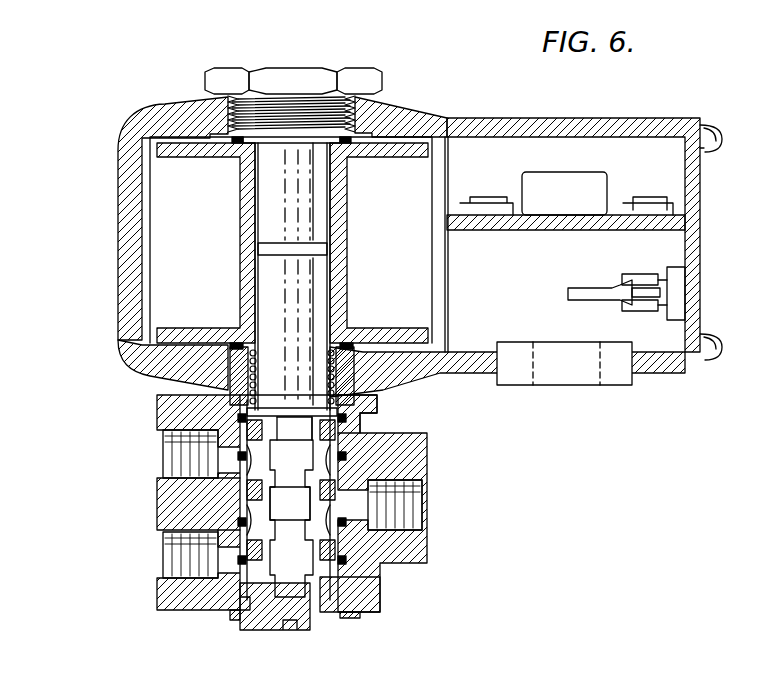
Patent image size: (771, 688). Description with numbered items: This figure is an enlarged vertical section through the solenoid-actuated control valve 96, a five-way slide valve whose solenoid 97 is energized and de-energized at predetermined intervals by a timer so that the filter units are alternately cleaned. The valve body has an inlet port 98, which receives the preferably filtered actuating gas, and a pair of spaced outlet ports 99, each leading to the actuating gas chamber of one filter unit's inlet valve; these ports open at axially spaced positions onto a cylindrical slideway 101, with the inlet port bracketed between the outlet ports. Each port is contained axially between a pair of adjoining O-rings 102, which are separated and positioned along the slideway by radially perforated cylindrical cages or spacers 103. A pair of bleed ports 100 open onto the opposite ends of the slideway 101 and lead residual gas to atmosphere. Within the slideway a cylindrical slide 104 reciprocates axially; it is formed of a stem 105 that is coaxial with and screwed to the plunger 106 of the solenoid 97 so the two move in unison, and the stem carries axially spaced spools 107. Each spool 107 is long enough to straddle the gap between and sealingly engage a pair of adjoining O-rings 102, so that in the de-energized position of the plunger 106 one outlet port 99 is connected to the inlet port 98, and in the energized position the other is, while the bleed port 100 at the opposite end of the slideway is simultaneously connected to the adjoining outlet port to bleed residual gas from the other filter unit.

The control valve 96 is at (153, 509).
The solenoid 97 is at (114, 251).
The inlet port 98 is at (424, 508).
The outlet ports 99 is at (195, 455).
The bleed ports 100 is at (372, 425).
The slideway 101 is at (240, 505).
The O-rings 102 is at (318, 465).
The spacers 103 is at (336, 494).
The slide 104 is at (247, 614).
The stem 105 is at (308, 522).
The plunger 106 is at (310, 344).
The spools 107 is at (302, 470).